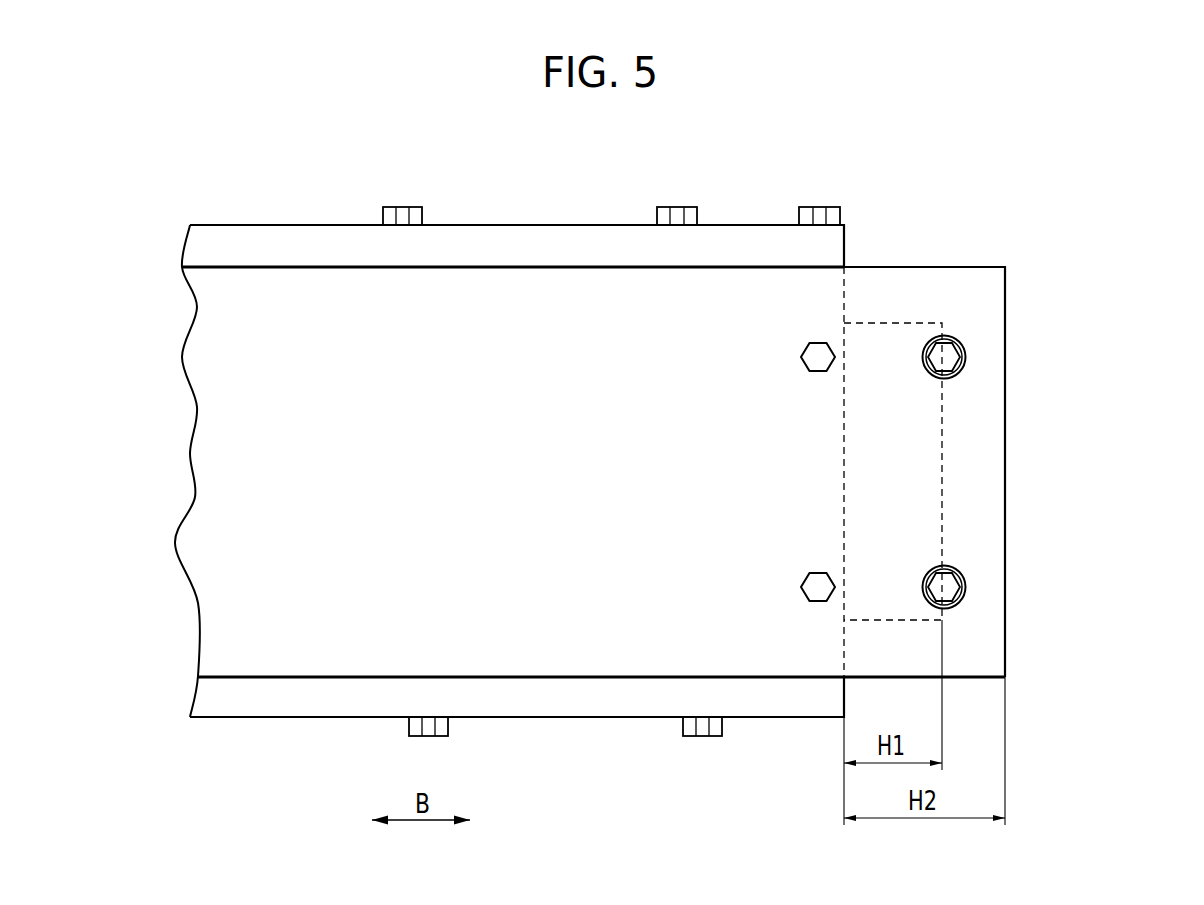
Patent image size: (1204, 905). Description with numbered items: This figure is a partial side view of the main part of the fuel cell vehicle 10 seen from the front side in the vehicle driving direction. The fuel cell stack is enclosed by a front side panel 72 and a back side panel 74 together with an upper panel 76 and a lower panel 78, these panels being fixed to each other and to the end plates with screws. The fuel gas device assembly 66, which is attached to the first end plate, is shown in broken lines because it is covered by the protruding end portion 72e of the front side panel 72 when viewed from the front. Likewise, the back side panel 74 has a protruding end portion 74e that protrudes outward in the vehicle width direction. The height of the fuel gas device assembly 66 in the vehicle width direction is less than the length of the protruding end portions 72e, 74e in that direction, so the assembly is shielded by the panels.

The vehicle body structure 10 is at (665, 125).
The fuel gas device assembly 66 is at (900, 337).
The front side panel 72 is at (596, 655).
The back side panel 74 is at (593, 533).
The protruding end portion 72e is at (988, 640).
The protruding end portion 74e is at (986, 498).
The upper panel 76 is at (557, 225).
The lower panel 78 is at (517, 717).